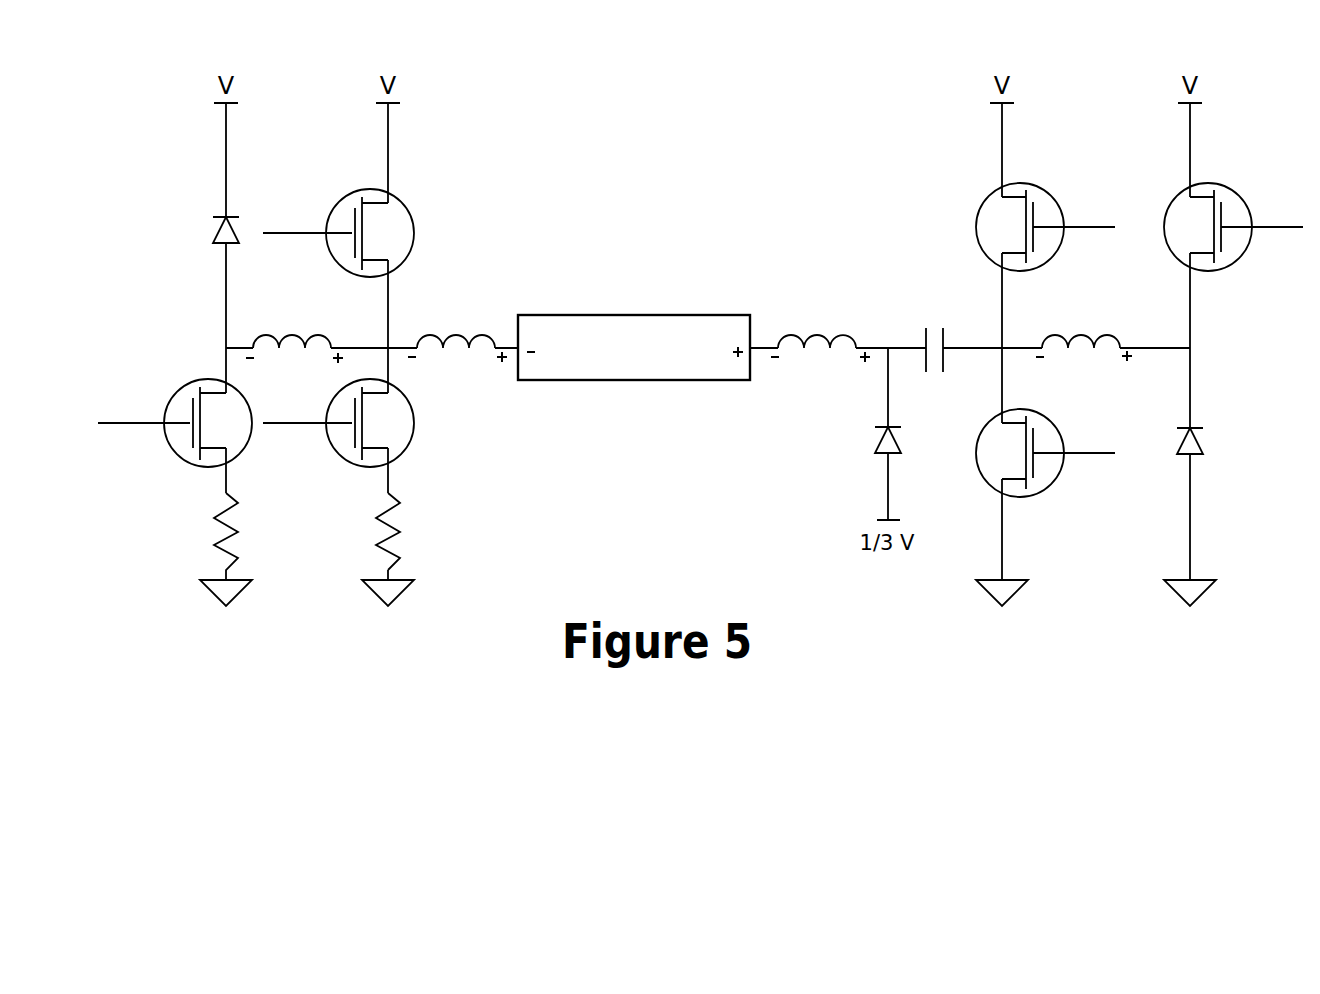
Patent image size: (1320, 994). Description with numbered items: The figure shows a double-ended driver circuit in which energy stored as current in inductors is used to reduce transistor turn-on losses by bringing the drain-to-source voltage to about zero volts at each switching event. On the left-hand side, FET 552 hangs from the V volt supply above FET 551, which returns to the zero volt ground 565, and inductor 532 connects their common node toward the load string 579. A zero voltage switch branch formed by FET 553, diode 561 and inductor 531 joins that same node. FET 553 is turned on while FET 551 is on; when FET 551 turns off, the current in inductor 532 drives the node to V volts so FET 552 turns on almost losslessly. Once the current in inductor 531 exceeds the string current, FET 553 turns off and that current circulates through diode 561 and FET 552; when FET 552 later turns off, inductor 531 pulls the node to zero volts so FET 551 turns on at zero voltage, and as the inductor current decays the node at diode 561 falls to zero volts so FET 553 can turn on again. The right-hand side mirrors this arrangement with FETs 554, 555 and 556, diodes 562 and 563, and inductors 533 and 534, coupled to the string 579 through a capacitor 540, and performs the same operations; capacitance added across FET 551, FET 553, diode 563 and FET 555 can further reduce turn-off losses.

The inductor 531 is at (292, 355).
The inductor 532 is at (456, 357).
The inductor 533 is at (817, 356).
The inductor 534 is at (1081, 356).
The capacitor 540 is at (936, 337).
The FET 551 is at (338, 423).
The FET 552 is at (338, 233).
The FET 553 is at (175, 423).
The FET 554 is at (1045, 227).
The FET 555 is at (1045, 453).
The FET 556 is at (1233, 227).
The diode 561 is at (205, 232).
The diode 562 is at (868, 442).
The diode 563 is at (1214, 440).
The ground 565 is at (689, 602).
The LED string 579 is at (634, 347).